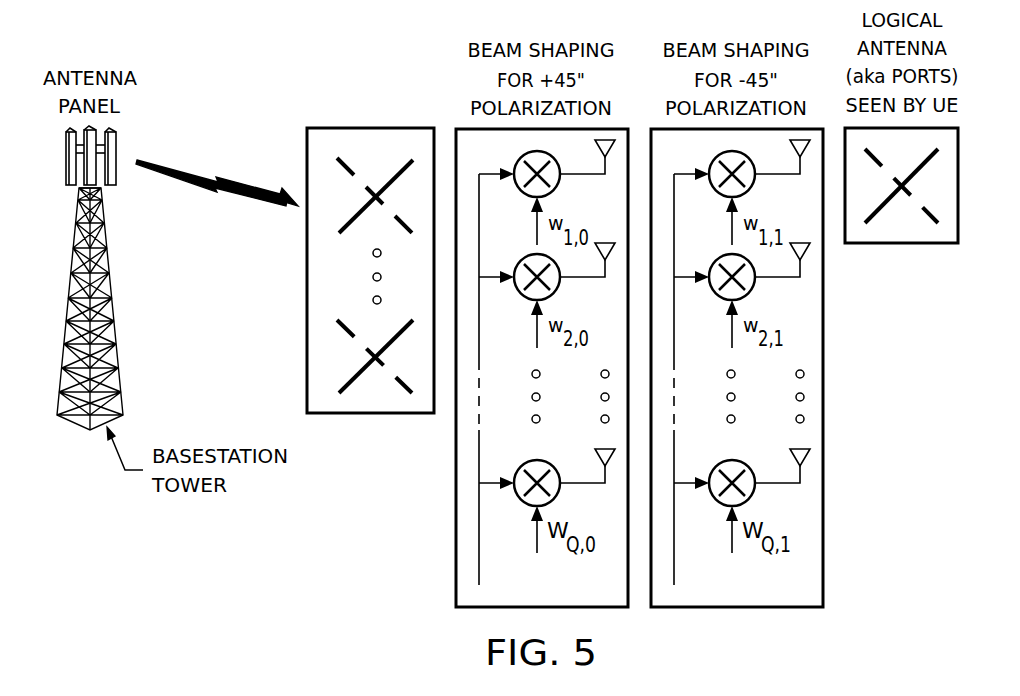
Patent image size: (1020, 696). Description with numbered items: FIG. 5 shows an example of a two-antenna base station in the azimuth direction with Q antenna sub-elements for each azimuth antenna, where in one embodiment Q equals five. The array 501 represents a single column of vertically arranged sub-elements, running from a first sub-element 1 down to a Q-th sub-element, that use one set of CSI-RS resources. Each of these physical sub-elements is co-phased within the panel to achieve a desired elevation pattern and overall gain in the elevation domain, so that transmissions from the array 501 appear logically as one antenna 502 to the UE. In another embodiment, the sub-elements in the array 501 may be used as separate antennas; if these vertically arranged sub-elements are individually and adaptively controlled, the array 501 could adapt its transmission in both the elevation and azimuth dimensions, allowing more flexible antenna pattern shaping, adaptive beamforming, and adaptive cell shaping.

The array 501 is at (370, 236).
The first cross-polarized antenna element of the antenna panel 1 is at (367, 185).
The antenna 502 is at (903, 250).